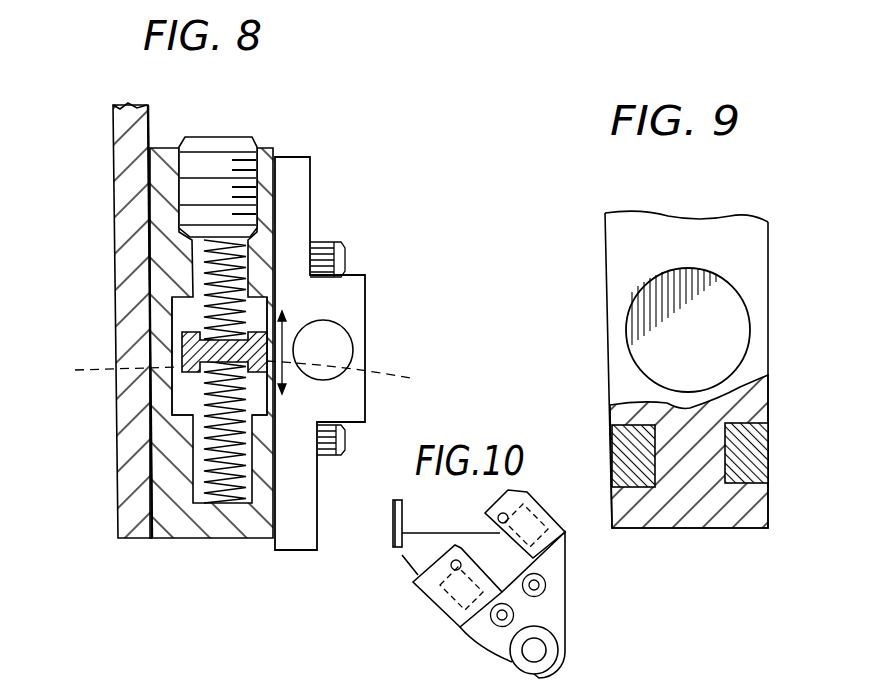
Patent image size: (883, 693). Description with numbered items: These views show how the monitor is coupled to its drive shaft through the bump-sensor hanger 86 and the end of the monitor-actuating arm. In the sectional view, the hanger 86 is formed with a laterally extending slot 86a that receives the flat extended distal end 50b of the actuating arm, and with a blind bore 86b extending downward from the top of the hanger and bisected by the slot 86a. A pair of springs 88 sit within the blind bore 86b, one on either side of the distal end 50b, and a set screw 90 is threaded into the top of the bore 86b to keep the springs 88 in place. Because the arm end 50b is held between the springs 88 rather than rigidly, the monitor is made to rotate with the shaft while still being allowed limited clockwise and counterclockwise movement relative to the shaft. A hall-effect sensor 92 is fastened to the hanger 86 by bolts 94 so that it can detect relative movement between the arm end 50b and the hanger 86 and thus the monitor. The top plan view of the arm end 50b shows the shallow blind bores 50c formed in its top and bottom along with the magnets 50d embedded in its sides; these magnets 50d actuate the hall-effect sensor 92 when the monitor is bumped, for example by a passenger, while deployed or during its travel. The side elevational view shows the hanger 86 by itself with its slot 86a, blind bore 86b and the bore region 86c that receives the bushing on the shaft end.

In FIG. 8, the bump-sensor hanger 86 is at (167, 147).
In FIG. 10, the bump-sensor hanger 86 is at (566, 590).
In FIG. 8, the laterally extending slot 86a is at (275, 306).
In FIG. 10, the laterally extending slot 86a is at (488, 548).
In FIG. 10, the blind bore 86b is at (548, 510).
In FIG. 10, the pivot eye 86c is at (512, 656).
In FIG. 8, the springs 88 is at (243, 272).
In FIG. 8, the set screw 90 is at (245, 136).
In FIG. 8, the hall-effect sensor 92 is at (367, 334).
In FIG. 8, the bolts 94 is at (341, 250).
In FIG. 8, the flat extended distal end 50b is at (182, 336).
In FIG. 9, the shallow blind bores 50c is at (707, 361).
In FIG. 8, the magnets 50d is at (243, 378).
In FIG. 9, the magnets 50d is at (615, 448).